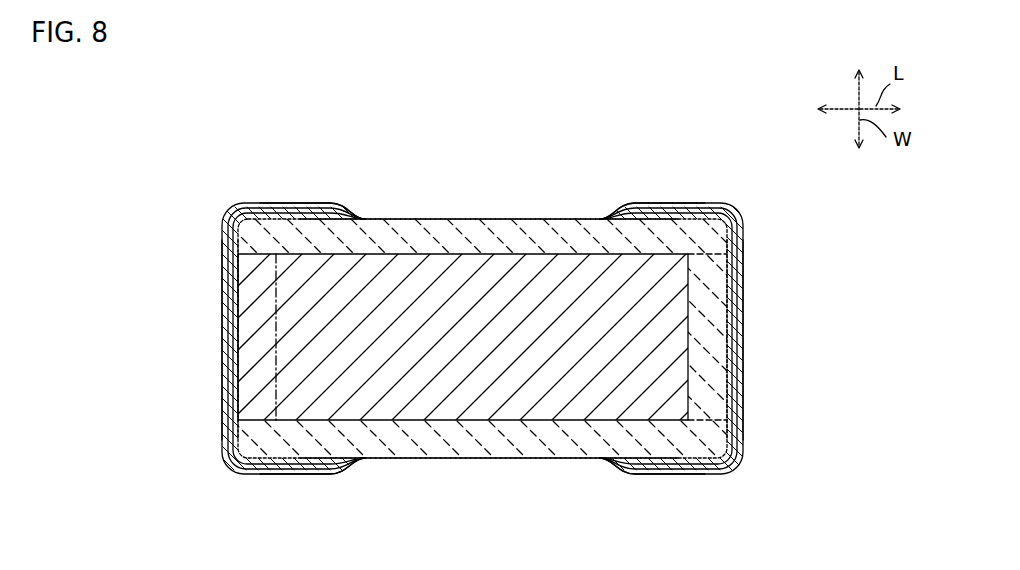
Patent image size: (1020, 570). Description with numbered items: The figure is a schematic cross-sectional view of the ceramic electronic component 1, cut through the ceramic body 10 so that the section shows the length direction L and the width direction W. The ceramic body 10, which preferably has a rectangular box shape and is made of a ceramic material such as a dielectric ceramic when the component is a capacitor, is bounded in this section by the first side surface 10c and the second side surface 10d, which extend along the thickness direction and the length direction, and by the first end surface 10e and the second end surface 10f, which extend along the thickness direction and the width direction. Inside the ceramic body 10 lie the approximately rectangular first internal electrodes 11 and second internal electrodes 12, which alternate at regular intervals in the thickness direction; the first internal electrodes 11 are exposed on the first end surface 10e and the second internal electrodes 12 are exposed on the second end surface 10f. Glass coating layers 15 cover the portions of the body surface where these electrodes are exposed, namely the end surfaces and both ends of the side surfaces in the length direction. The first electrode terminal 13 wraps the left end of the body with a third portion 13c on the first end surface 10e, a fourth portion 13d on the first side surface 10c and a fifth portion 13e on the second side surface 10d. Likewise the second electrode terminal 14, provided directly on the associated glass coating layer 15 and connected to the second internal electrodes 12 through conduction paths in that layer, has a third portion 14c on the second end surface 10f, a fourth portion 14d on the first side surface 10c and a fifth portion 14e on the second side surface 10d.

The ceramic electronic component 1 is at (729, 121).
The ceramic body 10 is at (512, 216).
The first side surface 10c is at (445, 459).
The second side surface 10d is at (447, 218).
The first end surface 10e is at (236, 400).
The second end surface 10f is at (728, 306).
The first internal electrodes 11 is at (621, 422).
The second internal electrodes 12 is at (240, 470).
The first electrode terminal 13 is at (315, 338).
The third portion 13c is at (228, 313).
The fourth portion 13d is at (320, 472).
The fifth portion 13e is at (316, 206).
The second electrode terminal 14 is at (744, 356).
The third portion 14c is at (746, 398).
The fourth portion 14d is at (648, 472).
The fifth portion 14e is at (664, 206).
The glass coating layers 15 is at (231, 279).